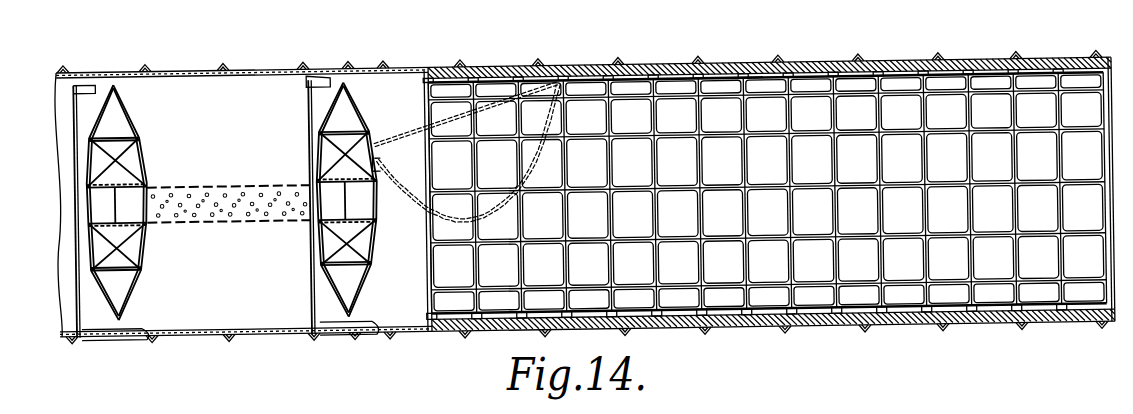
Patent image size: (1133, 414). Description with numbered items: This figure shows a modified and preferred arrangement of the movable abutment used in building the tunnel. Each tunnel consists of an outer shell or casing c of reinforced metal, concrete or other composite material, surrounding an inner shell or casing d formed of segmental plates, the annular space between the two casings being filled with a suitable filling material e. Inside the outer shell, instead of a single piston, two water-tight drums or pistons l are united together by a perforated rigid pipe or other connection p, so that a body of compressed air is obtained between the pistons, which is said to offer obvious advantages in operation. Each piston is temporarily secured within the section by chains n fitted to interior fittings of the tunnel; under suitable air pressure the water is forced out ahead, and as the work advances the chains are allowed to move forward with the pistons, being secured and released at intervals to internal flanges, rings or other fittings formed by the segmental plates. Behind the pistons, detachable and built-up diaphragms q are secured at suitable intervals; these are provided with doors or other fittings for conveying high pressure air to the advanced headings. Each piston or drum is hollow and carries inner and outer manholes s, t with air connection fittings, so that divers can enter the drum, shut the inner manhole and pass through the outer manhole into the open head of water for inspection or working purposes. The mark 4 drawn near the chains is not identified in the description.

The water-tight drum or piston l is at (152, 290).
The inner shell or casing d is at (945, 73).
The outer shell or casing c is at (890, 66).
The filling material e is at (815, 71).
The detachable and built-up diaphragms q is at (743, 160).
The inner manhole s is at (147, 241).
The outer manhole t is at (312, 239).
The perforated rigid pipe or other connection p is at (241, 178).
The taut chains n is at (466, 152).
The chain 4 is at (580, 156).